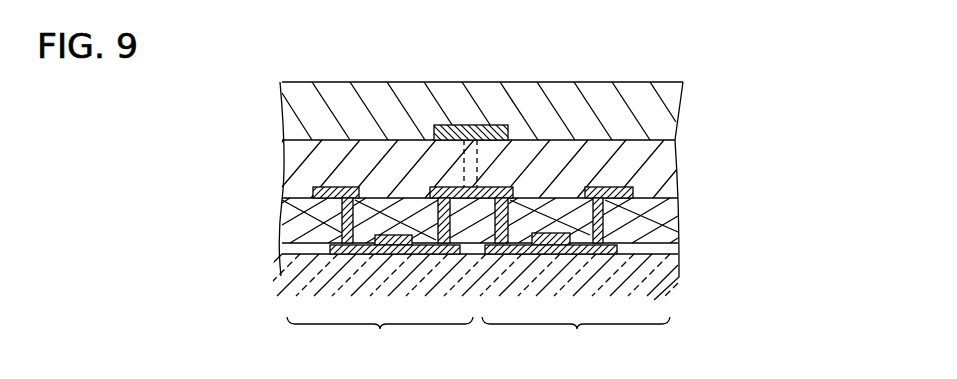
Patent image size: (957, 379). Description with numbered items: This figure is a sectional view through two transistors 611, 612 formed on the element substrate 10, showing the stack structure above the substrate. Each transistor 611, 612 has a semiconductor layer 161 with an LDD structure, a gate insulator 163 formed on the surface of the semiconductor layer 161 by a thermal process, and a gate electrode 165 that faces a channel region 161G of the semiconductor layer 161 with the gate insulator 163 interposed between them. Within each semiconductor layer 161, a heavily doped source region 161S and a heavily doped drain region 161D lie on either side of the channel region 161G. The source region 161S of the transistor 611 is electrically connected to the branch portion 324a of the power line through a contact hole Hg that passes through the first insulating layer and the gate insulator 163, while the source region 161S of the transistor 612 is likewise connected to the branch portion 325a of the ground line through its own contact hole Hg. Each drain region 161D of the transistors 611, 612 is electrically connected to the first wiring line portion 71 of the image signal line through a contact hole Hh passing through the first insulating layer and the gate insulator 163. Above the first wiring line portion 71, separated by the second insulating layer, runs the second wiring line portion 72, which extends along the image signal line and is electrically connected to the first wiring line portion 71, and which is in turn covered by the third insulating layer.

The element substrate 10 is at (680, 277).
The transistor 611 is at (367, 210).
The transistor 612 is at (562, 208).
The gate electrode 165 is at (410, 229).
The gate insulator 163 is at (620, 250).
The second wiring line portion 72 is at (434, 126).
The first wiring line portion 71 is at (493, 186).
The contact hole Hh is at (512, 200).
The contact hole Hg is at (290, 222).
The branch portion of the power line 324a is at (320, 187).
The branch portion of the ground line 325a is at (640, 187).
The heavily doped source region 161S is at (342, 258).
The channel region 161G is at (387, 258).
The heavily doped drain region 161D is at (443, 258).
The semiconductor layer 161 is at (478, 336).